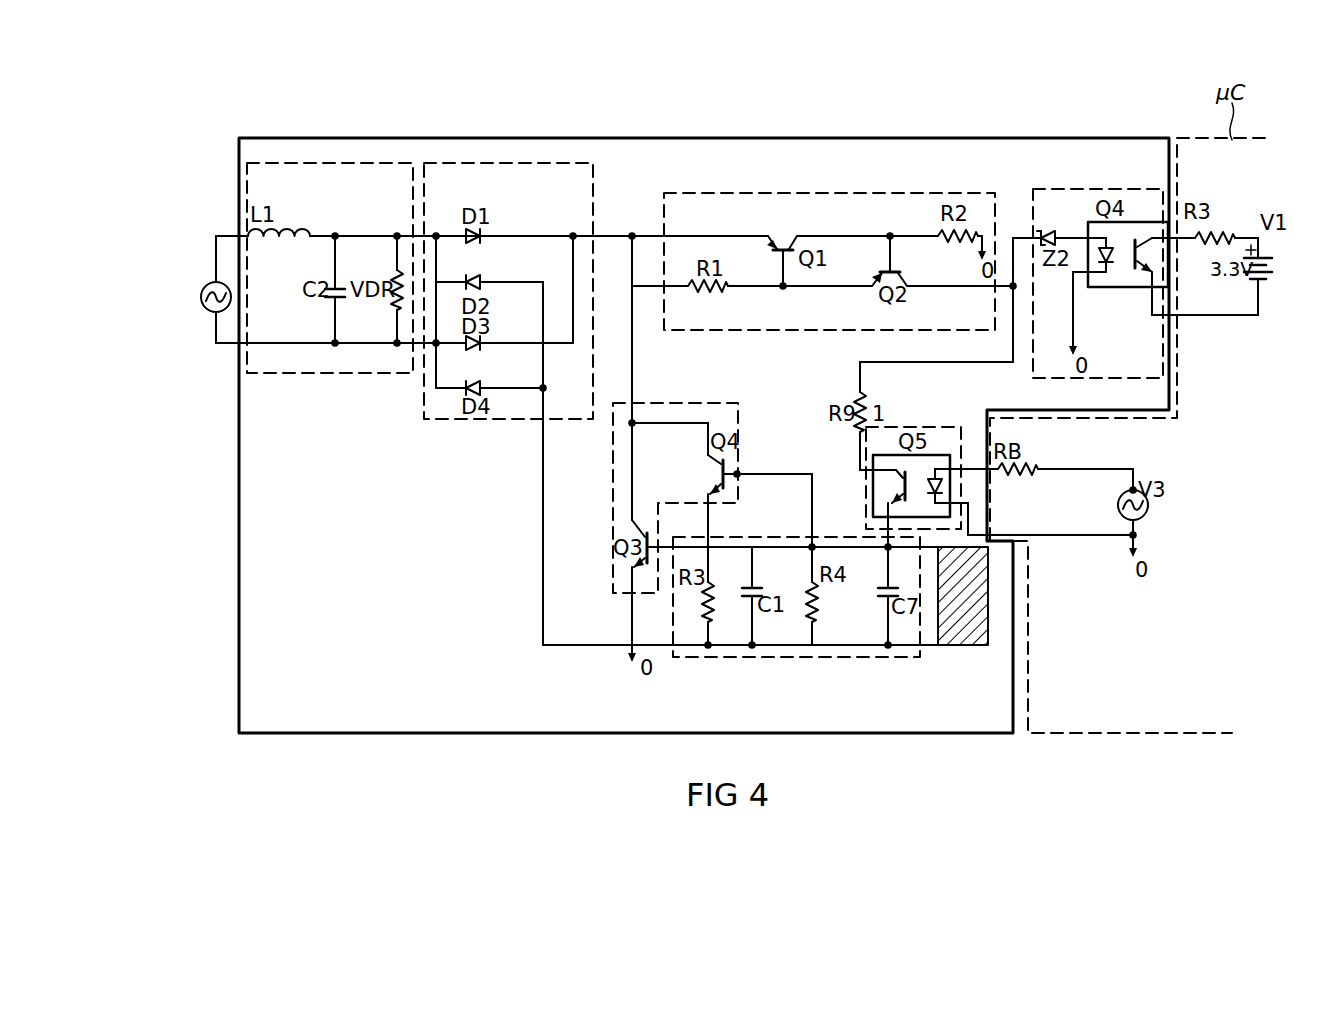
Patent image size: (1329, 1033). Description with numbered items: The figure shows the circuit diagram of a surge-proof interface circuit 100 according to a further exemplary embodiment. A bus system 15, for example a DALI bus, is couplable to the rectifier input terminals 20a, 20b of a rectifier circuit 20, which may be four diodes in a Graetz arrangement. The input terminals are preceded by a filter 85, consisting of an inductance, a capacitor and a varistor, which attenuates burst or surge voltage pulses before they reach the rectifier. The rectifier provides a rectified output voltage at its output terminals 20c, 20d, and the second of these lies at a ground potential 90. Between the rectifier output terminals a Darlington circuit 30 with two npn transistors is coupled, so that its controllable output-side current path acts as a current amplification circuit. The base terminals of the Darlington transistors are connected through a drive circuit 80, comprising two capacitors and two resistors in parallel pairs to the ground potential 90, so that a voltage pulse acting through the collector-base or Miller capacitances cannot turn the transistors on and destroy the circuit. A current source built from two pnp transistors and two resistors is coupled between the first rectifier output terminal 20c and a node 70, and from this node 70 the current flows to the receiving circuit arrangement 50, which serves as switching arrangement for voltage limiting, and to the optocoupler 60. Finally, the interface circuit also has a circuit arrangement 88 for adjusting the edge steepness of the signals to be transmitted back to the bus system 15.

The surge-proof interface circuit 100 is at (880, 134).
The bus system 15 is at (218, 234).
The filter 85 is at (280, 374).
The rectifier circuit 20 is at (594, 226).
The rectifier input terminal 20a is at (436, 232).
The rectifier input terminal 20b is at (434, 348).
The rectifier output terminal 20c is at (573, 232).
The rectifier output terminal 20d is at (542, 392).
The ground potential 90 is at (982, 232).
The node 70 is at (1012, 278).
The receiving circuit arrangement 50 is at (1080, 190).
The optocoupler 60 is at (915, 428).
The Darlington circuit 30 is at (612, 594).
The drive circuit 80 is at (810, 658).
The circuit arrangement for adjusting an edge steepness 88 is at (965, 647).